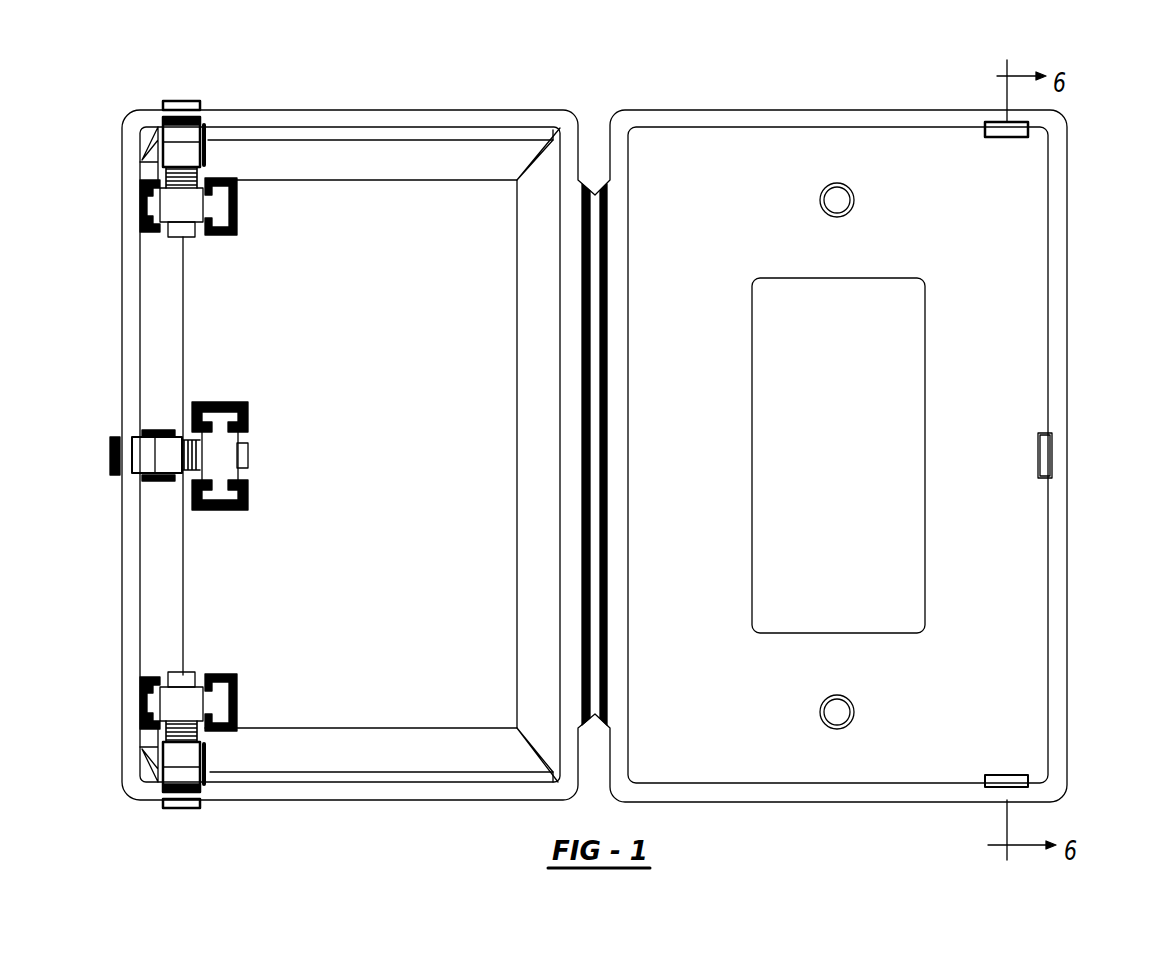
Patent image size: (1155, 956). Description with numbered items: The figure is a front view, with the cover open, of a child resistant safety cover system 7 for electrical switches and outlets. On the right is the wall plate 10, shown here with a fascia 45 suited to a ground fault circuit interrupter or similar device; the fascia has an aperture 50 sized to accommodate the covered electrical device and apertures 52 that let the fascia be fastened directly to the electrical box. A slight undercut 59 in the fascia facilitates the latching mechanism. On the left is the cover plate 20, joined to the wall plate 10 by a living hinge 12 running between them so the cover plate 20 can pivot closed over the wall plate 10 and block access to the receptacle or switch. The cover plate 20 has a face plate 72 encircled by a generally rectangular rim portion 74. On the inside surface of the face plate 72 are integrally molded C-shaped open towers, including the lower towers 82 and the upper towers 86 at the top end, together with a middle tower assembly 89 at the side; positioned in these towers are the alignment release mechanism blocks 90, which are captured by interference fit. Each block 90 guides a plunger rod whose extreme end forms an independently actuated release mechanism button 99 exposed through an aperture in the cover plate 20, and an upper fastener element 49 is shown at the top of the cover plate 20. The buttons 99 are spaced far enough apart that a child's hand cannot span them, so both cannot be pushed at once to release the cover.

The safety cover system 7 is at (531, 103).
The wall plate 10 is at (980, 395).
The living hinge 12 is at (596, 264).
The cover plate 20 is at (362, 110).
The fascia 45 is at (757, 195).
The upper screw 49 is at (181, 100).
The aperture 50 is at (922, 570).
The aperture 52 is at (825, 700).
The undercut 59 is at (1005, 138).
The face plate 72 is at (400, 316).
The rim portion 74 is at (330, 757).
The C-shaped open towers 82 is at (238, 688).
The C-shaped towers 86 is at (238, 229).
The middle clip 89 is at (246, 510).
The alignment release mechanism block 90 is at (200, 207).
The release mechanism button 99 is at (186, 810).